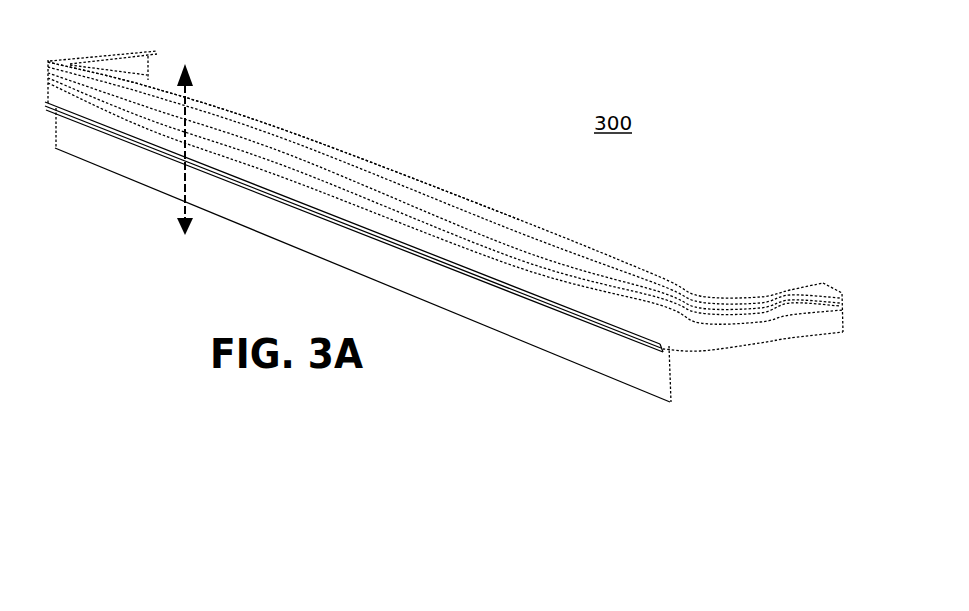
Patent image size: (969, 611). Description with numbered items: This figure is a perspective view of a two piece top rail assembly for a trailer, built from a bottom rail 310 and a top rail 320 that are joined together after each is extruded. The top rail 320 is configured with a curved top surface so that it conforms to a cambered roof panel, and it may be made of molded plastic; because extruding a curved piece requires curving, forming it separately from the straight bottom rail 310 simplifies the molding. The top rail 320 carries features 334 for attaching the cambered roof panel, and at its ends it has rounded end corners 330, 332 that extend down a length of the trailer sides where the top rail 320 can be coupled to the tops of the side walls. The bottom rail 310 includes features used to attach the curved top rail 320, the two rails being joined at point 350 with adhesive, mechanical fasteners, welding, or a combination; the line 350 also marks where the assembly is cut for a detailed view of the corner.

The bottom rail 310 is at (358, 252).
The top rail 320 is at (445, 192).
The rounded end corner 330 is at (103, 40).
The rounded end corner 332 is at (753, 294).
The features to attach the cambered roof panel 334 is at (284, 141).
The line / attachment point 350 is at (206, 53).